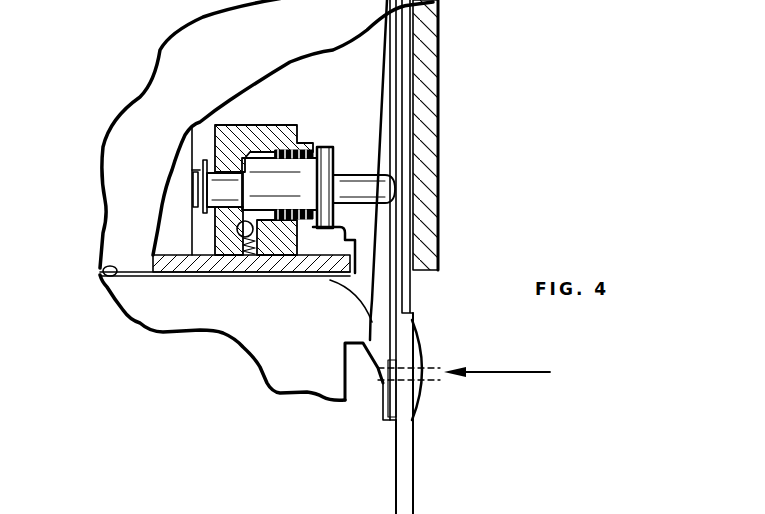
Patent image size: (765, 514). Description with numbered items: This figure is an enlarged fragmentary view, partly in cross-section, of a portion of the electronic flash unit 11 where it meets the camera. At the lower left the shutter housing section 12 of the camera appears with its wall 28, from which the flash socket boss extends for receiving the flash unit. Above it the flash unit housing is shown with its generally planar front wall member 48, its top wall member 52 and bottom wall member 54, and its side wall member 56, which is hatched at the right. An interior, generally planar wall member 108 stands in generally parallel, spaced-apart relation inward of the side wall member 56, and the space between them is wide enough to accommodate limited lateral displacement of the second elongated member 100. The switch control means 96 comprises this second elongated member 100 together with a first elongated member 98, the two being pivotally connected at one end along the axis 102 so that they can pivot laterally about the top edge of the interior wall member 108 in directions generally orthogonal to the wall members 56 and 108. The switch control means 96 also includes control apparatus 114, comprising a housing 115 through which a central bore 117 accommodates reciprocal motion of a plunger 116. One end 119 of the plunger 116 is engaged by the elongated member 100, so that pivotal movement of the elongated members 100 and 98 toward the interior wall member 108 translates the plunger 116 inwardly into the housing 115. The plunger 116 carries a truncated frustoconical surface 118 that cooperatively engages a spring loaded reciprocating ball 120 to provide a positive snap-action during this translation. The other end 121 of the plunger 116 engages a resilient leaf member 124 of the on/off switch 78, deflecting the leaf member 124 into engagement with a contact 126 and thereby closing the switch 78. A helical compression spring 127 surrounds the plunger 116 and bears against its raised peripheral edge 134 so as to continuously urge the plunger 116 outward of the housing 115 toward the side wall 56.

The electronic flash unit 11 is at (140, 65).
The housing section 12 is at (355, 385).
The wall 28 is at (100, 272).
The front wall member 48 is at (165, 121).
The top wall member 52 is at (218, 505).
The bottom wall member 54 is at (125, 270).
The side wall member 56 is at (440, 100).
The on/off switch 78 is at (188, 185).
The switch control means 96 is at (360, 140).
The first elongated member 98 is at (414, 492).
The second elongated member 100 is at (404, 292).
The pivot axis 102 is at (430, 385).
The interior wall member 108 is at (382, 95).
The control apparatus 114 is at (271, 123).
The housing 115 is at (245, 124).
The plunger 116 is at (297, 236).
The central bore 117 is at (222, 170).
The truncated frustoconical surface 118 is at (232, 207).
The plunger end 119 is at (397, 186).
The spring loaded reciprocating ball 120 is at (275, 228).
The plunger other end 121 is at (193, 168).
The resilient leaf member 124 is at (190, 207).
The contact 126 is at (200, 176).
The helical compression spring 127 is at (297, 145).
The raised peripheral edge 134 is at (309, 150).